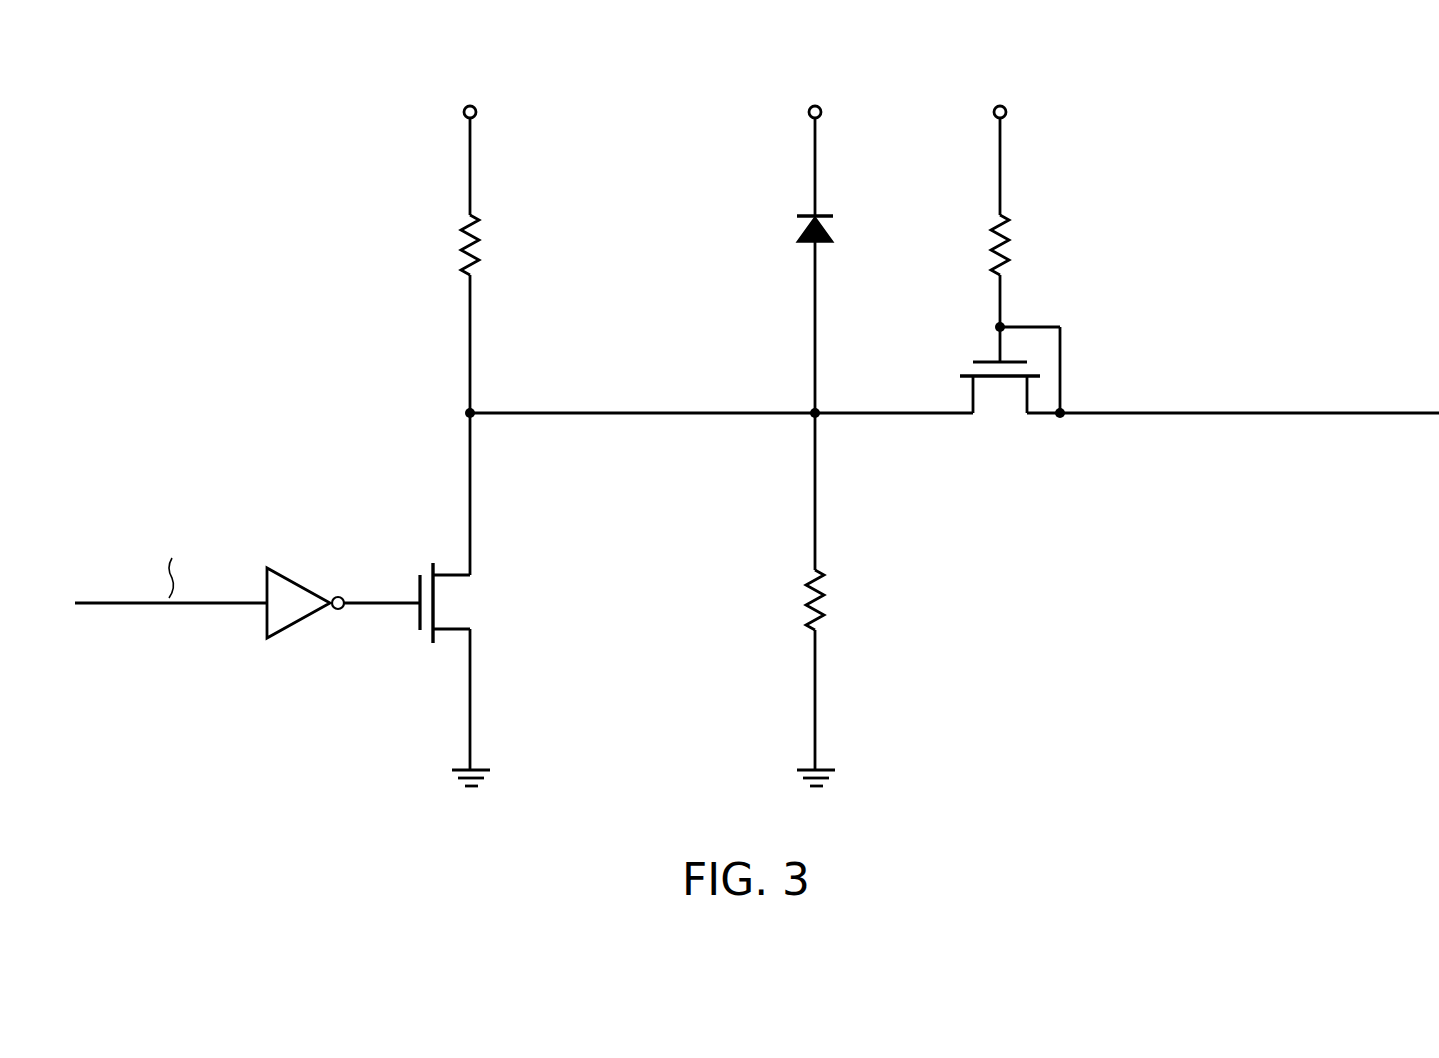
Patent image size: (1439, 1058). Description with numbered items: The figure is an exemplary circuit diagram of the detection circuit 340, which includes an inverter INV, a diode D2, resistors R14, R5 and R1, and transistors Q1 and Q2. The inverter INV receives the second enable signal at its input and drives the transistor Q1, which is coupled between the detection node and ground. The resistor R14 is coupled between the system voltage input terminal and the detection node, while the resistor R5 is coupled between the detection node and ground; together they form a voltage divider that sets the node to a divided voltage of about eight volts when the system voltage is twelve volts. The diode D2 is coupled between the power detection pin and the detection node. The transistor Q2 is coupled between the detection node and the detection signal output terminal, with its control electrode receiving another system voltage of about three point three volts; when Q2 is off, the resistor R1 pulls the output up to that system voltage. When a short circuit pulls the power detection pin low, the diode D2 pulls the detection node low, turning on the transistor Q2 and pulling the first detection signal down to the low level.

The detection circuit 340 is at (183, 85).
The resistor R14 is at (490, 247).
The diode D2 is at (835, 232).
The resistor R1 is at (1020, 247).
The transistor Q2 is at (1004, 425).
The transistor Q1 is at (480, 603).
The resistor R5 is at (832, 603).
The inverter INV is at (300, 620).